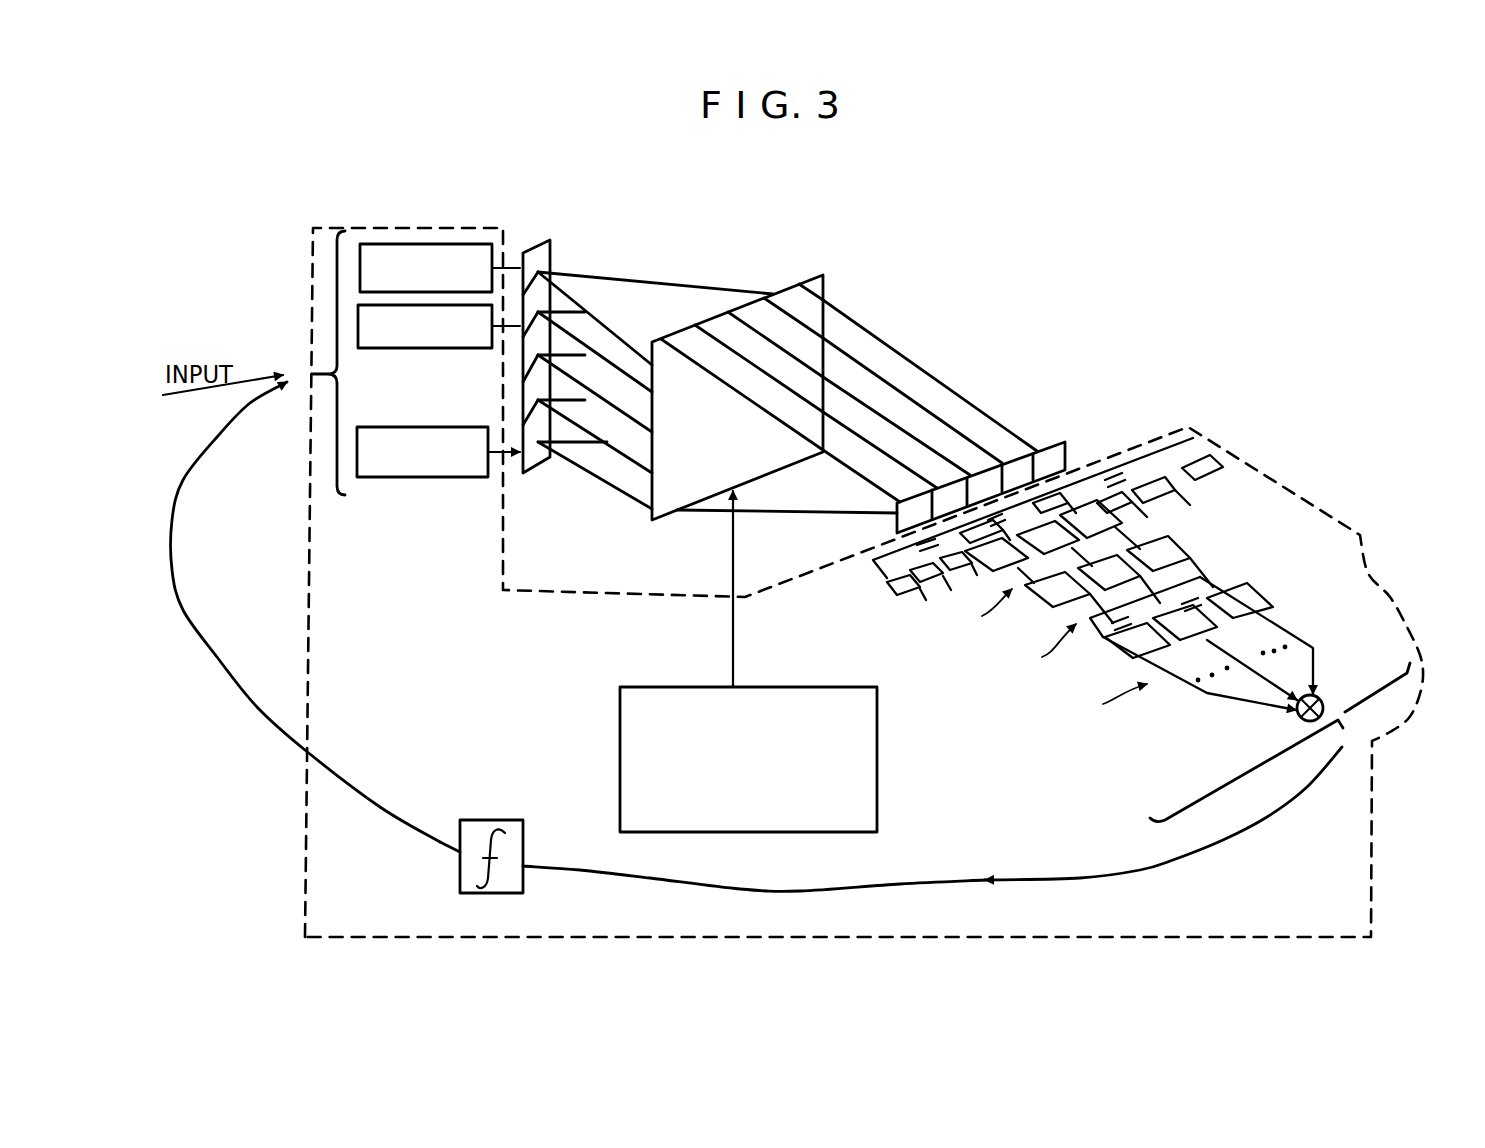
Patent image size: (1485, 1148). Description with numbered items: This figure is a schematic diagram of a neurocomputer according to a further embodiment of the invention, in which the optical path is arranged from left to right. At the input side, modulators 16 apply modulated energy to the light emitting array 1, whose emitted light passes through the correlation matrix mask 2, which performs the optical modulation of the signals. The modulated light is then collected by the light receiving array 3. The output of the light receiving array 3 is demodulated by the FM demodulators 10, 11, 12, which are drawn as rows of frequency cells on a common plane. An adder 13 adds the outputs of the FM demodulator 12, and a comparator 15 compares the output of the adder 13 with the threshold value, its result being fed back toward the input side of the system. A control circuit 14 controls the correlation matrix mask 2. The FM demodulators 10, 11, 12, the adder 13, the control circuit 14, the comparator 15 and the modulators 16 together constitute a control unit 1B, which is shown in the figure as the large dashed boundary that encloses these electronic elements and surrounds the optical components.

The light emitting array 1 is at (553, 250).
The correlation matrix mask 2 is at (825, 280).
The light receiving array 3 is at (1048, 448).
The FM demodulator 10 is at (1137, 447).
The FM demodulator 11 is at (1172, 543).
The FM demodulator 12 is at (1243, 590).
The adder 13 is at (1323, 694).
The control circuit 14 is at (877, 757).
The comparator 15 is at (498, 820).
The modulators 16 is at (430, 242).
The control unit 1B is at (1371, 803).